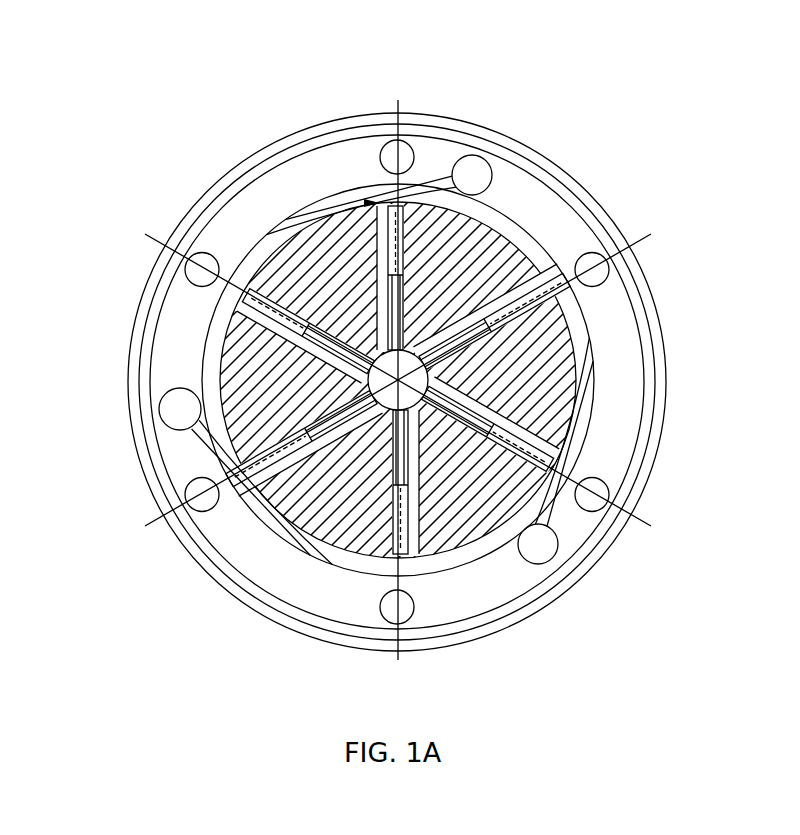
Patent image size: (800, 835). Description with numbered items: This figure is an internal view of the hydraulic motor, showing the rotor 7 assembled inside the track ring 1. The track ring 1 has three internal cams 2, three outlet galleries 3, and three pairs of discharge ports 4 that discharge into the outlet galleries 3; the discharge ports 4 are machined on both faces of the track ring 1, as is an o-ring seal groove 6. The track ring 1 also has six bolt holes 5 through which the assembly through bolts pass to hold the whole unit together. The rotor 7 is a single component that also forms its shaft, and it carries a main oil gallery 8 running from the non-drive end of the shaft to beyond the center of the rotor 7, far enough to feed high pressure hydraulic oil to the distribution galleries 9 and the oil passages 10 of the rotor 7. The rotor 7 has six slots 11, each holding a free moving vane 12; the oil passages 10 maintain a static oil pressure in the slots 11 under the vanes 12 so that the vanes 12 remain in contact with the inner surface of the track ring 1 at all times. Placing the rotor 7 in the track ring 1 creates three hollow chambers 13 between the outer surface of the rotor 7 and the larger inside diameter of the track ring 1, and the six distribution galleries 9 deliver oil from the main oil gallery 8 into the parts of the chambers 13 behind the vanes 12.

The track ring 1 is at (303, 177).
The internal cam 2 is at (455, 207).
The outlet gallery 3 is at (472, 175).
The discharge port 4 is at (388, 197).
The bolt hole 5 is at (396, 146).
The o-ring seal groove 6 is at (449, 128).
The rotor 7 is at (320, 272).
The main oil gallery 8 is at (306, 320).
The distribution gallery 9 is at (325, 348).
The oil passage 10 is at (318, 418).
The slot 11 is at (480, 327).
The vane 12 is at (568, 290).
The hollow chamber 13 is at (517, 238).